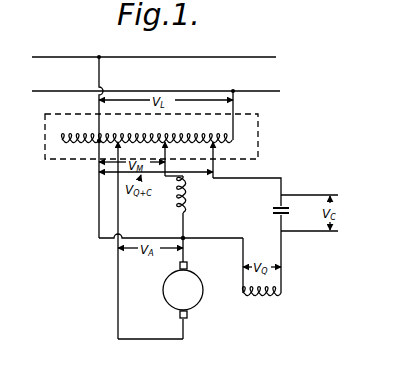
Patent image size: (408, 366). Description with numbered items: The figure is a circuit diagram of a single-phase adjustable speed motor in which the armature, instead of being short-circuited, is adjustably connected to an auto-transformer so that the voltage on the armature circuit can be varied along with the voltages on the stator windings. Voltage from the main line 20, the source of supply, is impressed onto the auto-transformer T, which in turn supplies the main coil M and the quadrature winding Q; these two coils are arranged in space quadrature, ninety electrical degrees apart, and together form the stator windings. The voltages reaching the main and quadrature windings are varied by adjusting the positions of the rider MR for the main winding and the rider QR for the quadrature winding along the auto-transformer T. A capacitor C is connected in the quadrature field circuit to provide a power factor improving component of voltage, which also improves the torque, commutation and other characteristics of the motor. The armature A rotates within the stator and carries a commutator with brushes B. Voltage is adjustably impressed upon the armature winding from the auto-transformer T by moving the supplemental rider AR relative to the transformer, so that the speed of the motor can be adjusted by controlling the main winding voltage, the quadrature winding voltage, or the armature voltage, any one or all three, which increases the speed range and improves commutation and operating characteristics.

The main line 20 is at (249, 63).
The auto-transformer T is at (151, 136).
The supplemental rider AR is at (127, 240).
The rider for the main winding MR is at (175, 159).
The rider for the quadrature winding QR is at (223, 160).
The main coil M is at (190, 207).
The capacitor C is at (287, 248).
The quadrature winding Q is at (261, 278).
The armature A is at (160, 288).
The brushes B is at (189, 290).